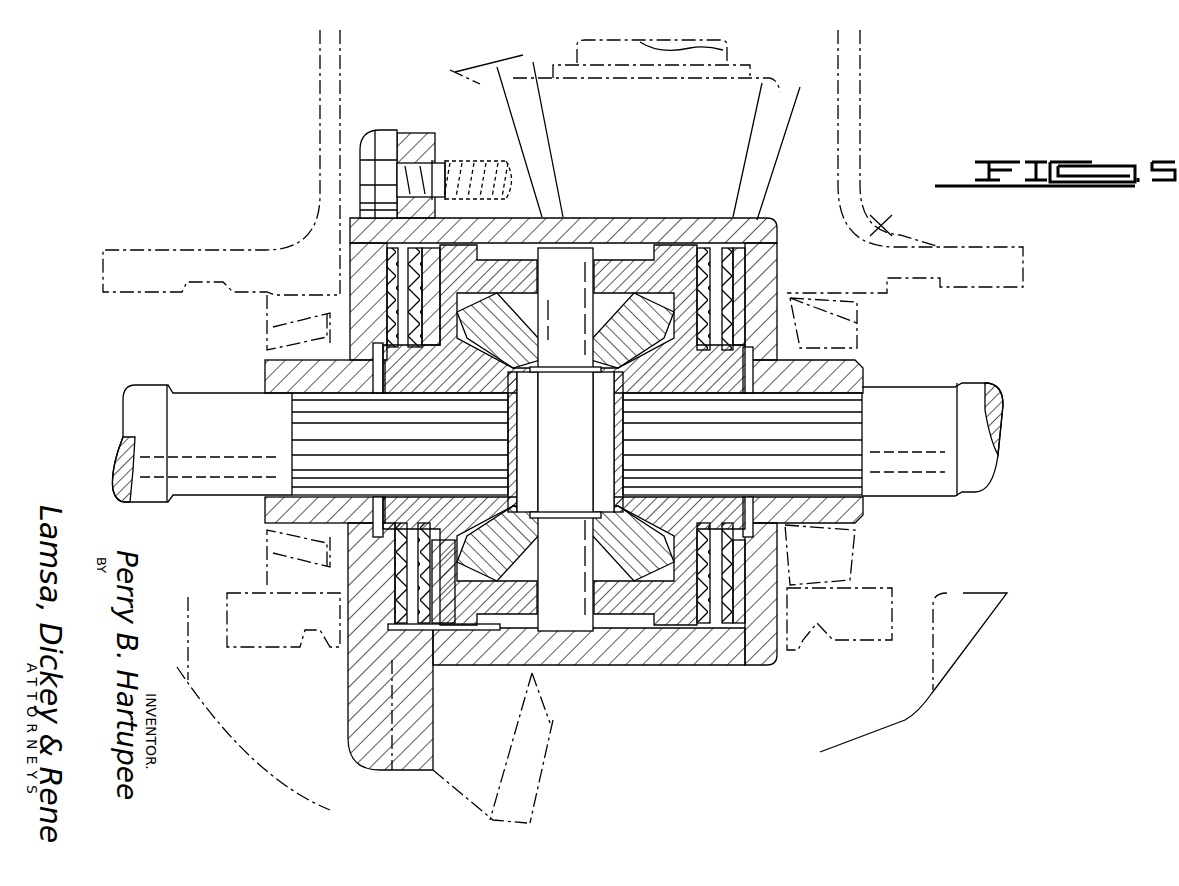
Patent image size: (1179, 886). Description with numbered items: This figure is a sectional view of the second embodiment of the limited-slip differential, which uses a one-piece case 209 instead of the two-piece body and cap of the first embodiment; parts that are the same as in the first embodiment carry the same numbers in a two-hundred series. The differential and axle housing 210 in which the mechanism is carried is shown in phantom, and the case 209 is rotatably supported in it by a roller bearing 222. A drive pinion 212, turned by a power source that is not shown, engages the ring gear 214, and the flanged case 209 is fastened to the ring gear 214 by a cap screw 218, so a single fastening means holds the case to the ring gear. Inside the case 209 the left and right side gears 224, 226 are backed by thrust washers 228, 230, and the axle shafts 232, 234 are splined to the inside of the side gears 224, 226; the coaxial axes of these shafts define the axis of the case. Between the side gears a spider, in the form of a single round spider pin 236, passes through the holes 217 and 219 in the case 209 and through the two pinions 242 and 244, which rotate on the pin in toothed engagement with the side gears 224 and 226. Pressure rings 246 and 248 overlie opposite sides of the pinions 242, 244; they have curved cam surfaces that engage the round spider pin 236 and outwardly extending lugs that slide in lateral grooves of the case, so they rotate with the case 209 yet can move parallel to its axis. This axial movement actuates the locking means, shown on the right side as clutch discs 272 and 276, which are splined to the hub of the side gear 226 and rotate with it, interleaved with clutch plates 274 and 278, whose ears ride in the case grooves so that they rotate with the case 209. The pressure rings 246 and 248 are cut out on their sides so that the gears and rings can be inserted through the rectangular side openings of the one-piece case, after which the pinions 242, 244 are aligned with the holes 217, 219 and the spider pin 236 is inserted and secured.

The case 209 is at (778, 216).
The housing 210 is at (898, 230).
The drive pinion 212 is at (782, 85).
The ring gear 214 is at (455, 72).
The hole 217 is at (505, 180).
The cap screw 218 is at (373, 152).
The hole 219 is at (590, 652).
The roller bearing 222 is at (848, 334).
The side gear 224 is at (495, 383).
The side gear 226 is at (690, 376).
The thrust washer 228 is at (375, 350).
The thrust washer 230 is at (842, 350).
The axle shaft 232 is at (250, 428).
The axle shaft 234 is at (935, 433).
The spider pin 236 is at (590, 412).
The pinion 242 is at (610, 287).
The pinion 244 is at (612, 583).
The pressure ring 246 is at (528, 265).
The pressure ring 248 is at (672, 262).
The clutch disc 272 is at (688, 622).
The clutch plate 274 is at (715, 622).
The clutch disc 276 is at (737, 632).
The clutch plate 278 is at (742, 610).